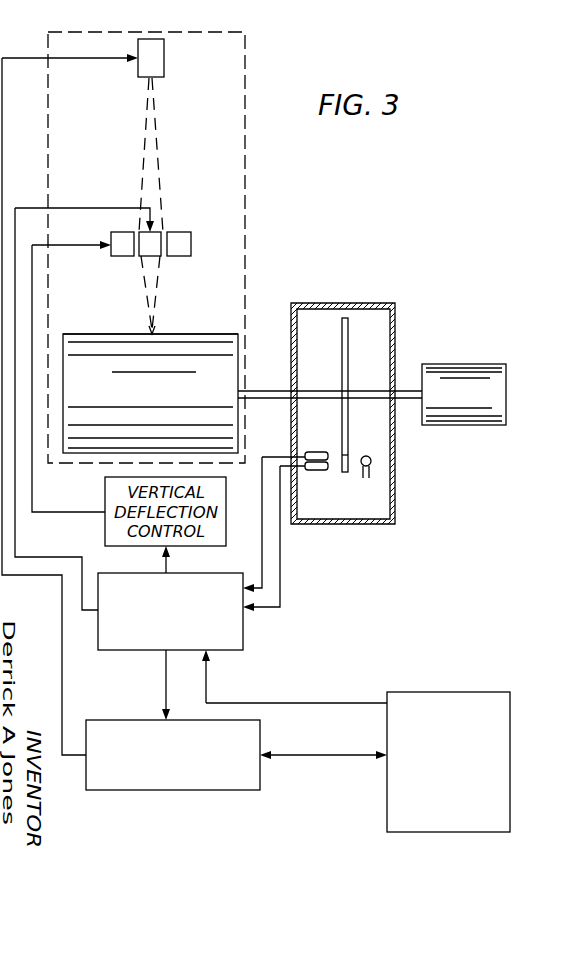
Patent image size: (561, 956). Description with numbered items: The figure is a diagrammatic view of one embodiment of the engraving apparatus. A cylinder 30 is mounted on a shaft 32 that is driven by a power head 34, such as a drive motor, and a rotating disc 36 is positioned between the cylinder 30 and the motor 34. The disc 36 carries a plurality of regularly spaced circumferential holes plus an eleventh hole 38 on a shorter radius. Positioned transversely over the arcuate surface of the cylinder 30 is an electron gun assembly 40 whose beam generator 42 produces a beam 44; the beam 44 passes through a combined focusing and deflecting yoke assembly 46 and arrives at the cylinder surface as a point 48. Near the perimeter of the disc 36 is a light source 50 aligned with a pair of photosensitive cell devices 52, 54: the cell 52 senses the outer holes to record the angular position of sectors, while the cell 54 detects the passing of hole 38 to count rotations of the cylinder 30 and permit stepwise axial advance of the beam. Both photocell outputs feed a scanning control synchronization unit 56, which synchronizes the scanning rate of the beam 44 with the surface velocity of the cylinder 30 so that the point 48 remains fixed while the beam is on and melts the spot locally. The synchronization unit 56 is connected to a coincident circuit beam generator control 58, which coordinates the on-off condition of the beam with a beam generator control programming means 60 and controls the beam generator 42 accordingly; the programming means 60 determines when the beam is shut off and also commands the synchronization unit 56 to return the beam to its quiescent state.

The cylinder 30 is at (163, 401).
The shaft 32 is at (262, 391).
The power head 34 is at (472, 402).
The rotating disc 36 is at (348, 365).
The eleventh hole 38 is at (353, 459).
The electron gun assembly 40 is at (247, 178).
The beam generator 42 is at (140, 63).
The beam 44 is at (157, 140).
The combined focusing and deflecting yoke assembly 46 is at (148, 250).
The point 48 is at (156, 334).
The light source 50 is at (376, 461).
The photosensitive cell device 52 is at (316, 470).
The photosensitive cell device 54 is at (316, 452).
The scanning control synchronization unit 56 is at (245, 637).
The coincident circuit beam generator control 58 is at (135, 719).
The beam generator control programming means 60 is at (467, 692).